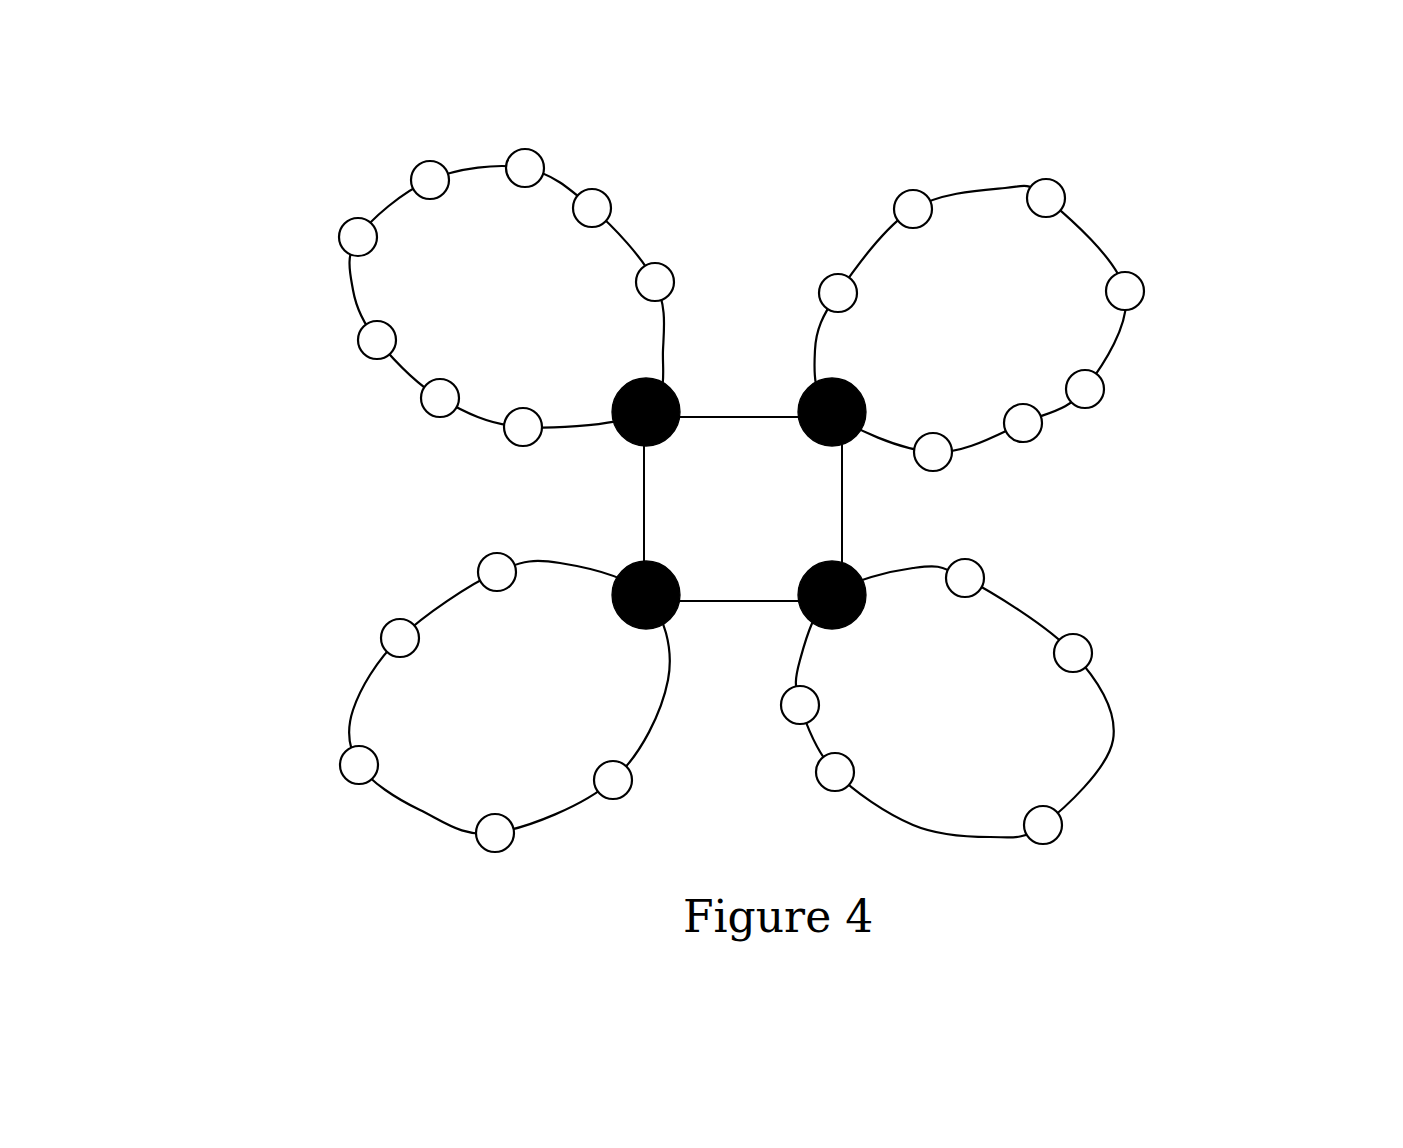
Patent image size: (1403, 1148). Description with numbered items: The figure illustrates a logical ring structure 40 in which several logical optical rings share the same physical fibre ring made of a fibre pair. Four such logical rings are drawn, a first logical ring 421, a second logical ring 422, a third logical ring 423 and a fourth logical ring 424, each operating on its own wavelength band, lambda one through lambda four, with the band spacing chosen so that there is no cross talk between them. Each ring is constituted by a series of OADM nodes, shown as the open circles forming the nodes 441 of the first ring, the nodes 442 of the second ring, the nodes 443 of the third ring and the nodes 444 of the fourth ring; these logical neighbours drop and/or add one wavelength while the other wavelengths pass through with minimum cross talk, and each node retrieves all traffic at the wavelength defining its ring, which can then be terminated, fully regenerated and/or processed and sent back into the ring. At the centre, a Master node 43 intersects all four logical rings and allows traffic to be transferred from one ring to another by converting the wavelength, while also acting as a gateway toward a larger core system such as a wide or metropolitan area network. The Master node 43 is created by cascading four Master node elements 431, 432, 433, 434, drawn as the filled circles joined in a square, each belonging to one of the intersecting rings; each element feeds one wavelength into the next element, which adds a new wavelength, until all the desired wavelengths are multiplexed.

The logical ring structure 40 is at (1347, 158).
The Master node 43 is at (796, 503).
The Master node element 431 is at (617, 432).
The Master node element 432 is at (847, 438).
The Master node element 433 is at (855, 568).
The Master node element 434 is at (613, 572).
The logical optical ring 421 is at (352, 295).
The logical optical ring 422 is at (1101, 218).
The logical optical ring 423 is at (1113, 753).
The logical optical ring 424 is at (417, 825).
The OADM nodes 441 is at (412, 172).
The OADM nodes 442 is at (838, 275).
The OADM nodes 443 is at (817, 768).
The OADM nodes 444 is at (477, 570).